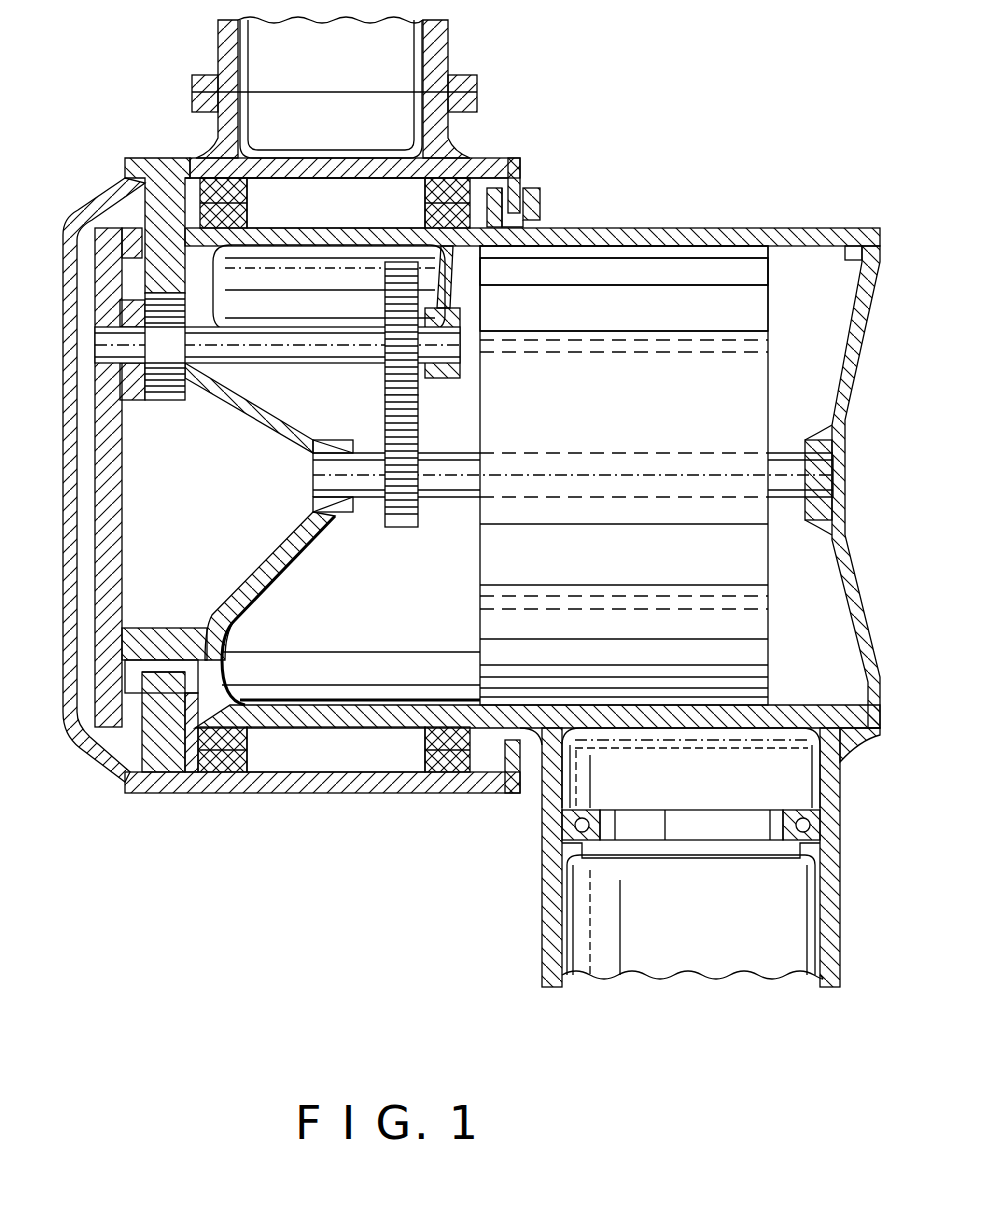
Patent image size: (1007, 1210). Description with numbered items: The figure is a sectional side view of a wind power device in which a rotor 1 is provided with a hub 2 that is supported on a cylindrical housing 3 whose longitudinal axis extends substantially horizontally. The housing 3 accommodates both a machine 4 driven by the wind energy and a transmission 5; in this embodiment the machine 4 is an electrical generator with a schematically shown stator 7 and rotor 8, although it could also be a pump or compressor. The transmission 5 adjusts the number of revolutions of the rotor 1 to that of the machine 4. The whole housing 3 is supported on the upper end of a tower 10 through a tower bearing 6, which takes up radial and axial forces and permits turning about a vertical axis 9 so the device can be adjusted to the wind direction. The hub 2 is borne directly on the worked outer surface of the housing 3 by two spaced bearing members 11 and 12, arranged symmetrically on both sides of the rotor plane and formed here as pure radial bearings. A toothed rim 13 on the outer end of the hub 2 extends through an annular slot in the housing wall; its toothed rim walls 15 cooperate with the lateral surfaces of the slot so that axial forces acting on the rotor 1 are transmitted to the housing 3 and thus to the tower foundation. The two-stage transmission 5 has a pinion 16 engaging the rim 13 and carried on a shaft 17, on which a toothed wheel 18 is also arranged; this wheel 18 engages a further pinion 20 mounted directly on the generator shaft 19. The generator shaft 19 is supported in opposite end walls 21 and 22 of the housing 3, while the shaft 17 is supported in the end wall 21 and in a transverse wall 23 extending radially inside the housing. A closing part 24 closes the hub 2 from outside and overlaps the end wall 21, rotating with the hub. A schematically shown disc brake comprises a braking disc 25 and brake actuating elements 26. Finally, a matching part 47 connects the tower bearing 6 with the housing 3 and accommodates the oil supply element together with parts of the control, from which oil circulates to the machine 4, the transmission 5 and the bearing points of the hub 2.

The rotor 1 is at (438, 45).
The hub 2 is at (477, 167).
The housing 3 is at (625, 232).
The machine 4 is at (768, 278).
The transmission 5 is at (275, 262).
The tower bearing 6 is at (818, 823).
The stator 7 is at (685, 282).
The rotor 8 is at (735, 388).
The vertical axis 9 is at (722, 960).
The tower 10 is at (830, 956).
The bearing member 11 is at (230, 757).
The bearing member 12 is at (440, 757).
The toothed rim 13 is at (148, 728).
The toothed rim walls 15 is at (132, 750).
The pinion 16 is at (160, 342).
The shaft 17 is at (112, 350).
The toothed wheel 18 is at (397, 377).
The generator shaft 19 is at (812, 478).
The further pinion 20 is at (402, 528).
The end wall 21 is at (108, 415).
The end wall 22 is at (880, 250).
The transverse wall 23 is at (445, 250).
The closing part 24 is at (72, 472).
The braking disc 25 is at (512, 797).
The brake actuating elements 26 is at (538, 200).
The matching part 47 is at (790, 760).